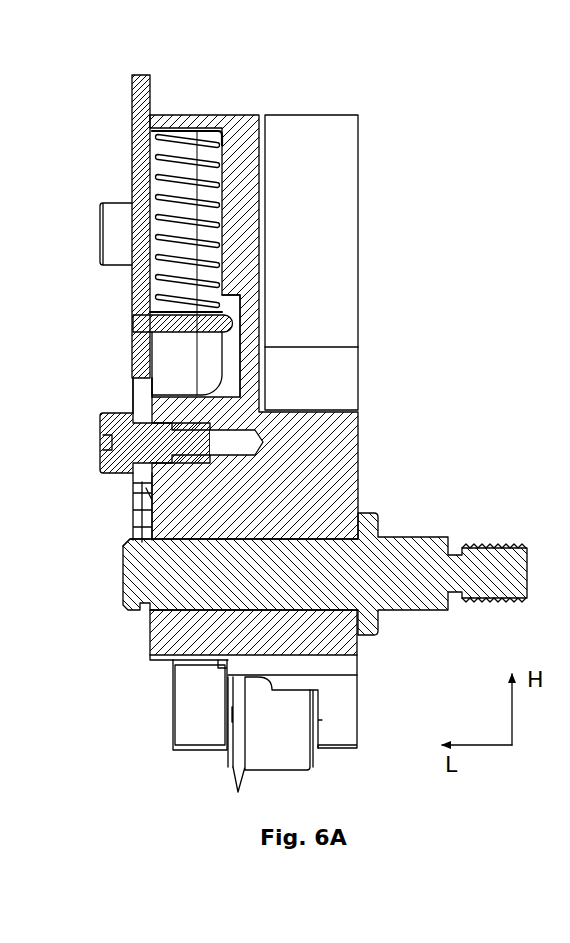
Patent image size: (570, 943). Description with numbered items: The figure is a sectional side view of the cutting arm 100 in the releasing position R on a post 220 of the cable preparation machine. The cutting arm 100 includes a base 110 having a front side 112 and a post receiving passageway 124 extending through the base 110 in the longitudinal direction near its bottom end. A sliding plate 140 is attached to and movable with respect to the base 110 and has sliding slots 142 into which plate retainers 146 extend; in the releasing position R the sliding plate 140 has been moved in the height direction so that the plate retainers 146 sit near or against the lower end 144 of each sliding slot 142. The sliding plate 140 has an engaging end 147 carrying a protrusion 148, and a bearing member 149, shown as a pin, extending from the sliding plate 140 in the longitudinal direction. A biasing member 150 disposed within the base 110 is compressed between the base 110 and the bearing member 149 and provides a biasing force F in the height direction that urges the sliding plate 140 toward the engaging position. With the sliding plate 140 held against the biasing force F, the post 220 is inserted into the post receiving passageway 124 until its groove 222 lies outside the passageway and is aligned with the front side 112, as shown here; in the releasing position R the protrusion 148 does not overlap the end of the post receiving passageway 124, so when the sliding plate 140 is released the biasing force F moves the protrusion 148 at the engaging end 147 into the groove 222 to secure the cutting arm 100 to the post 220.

The cutting arm 100 is at (270, 422).
The base 110 is at (367, 458).
The front side 112 is at (132, 532).
The post receiving passageway 124 is at (303, 620).
The sliding plate 140 is at (130, 134).
The sliding slot 142 is at (134, 393).
The lower end 144 is at (138, 448).
The plate retainer 146 is at (143, 488).
The engaging end 147 is at (132, 498).
The protrusion 148 is at (143, 507).
The bearing member 149 is at (232, 325).
The biasing member 150 is at (152, 284).
The post 220 is at (403, 563).
The groove 222 is at (287, 559).
The releasing position R is at (376, 55).
The biasing force F is at (185, 172).